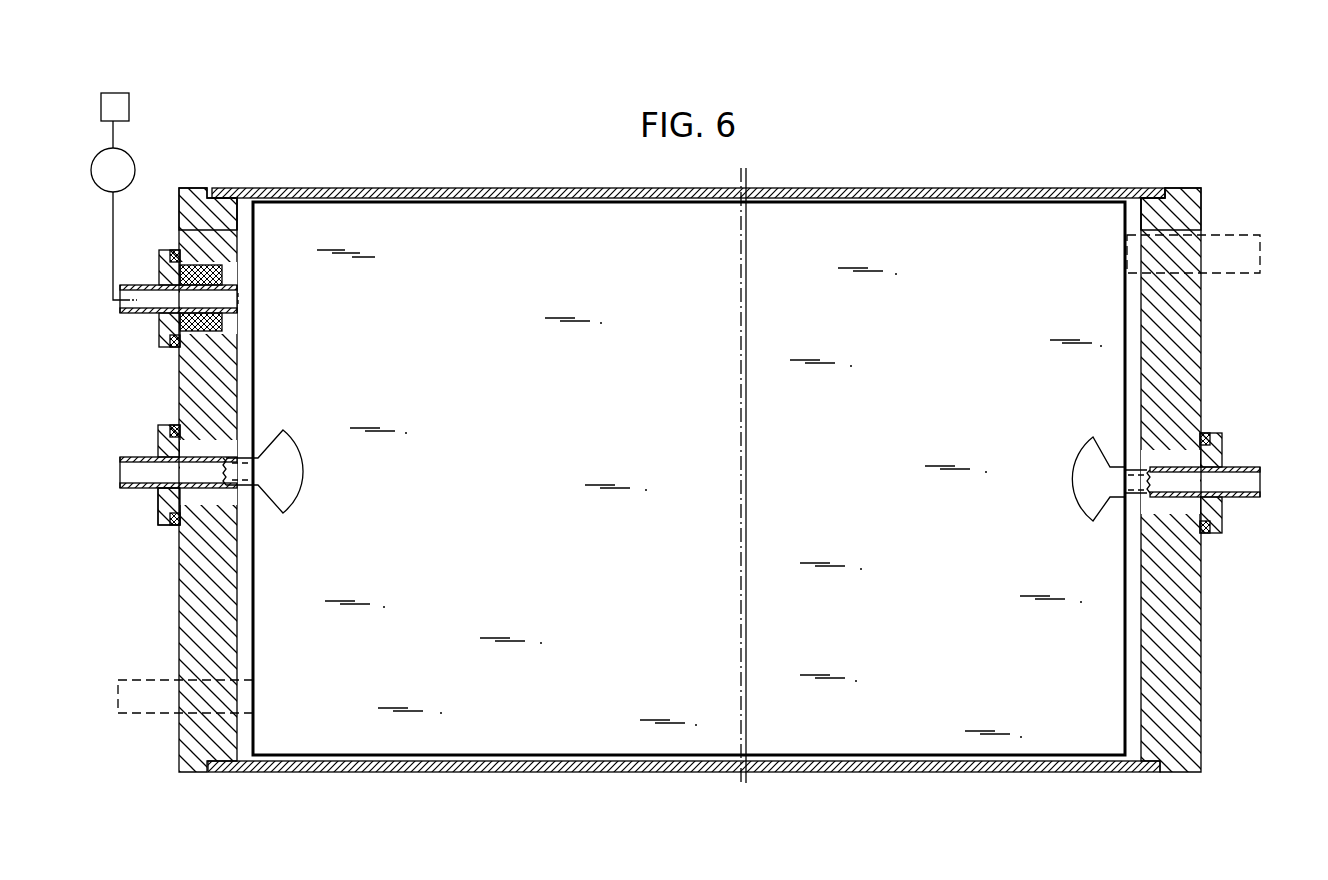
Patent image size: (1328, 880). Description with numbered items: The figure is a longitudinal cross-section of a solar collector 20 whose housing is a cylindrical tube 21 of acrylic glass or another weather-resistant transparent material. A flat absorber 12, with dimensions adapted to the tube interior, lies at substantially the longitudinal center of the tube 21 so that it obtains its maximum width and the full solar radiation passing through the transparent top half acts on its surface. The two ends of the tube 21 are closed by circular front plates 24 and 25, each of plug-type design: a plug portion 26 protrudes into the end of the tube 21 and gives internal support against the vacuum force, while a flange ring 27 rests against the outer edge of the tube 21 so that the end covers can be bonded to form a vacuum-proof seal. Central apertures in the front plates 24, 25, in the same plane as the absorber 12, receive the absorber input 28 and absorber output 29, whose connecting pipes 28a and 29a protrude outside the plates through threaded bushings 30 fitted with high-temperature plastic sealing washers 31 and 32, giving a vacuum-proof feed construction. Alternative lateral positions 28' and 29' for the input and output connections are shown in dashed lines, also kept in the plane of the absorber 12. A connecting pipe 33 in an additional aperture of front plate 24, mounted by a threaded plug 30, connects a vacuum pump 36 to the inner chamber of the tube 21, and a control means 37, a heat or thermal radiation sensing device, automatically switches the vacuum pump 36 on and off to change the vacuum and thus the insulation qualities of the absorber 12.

The absorber 12 is at (461, 437).
The solar collector 20 is at (911, 186).
The cylindrical tube 21 is at (367, 764).
The front plate 24 is at (195, 383).
The front plate 25 is at (1192, 315).
The plug portion 26 is at (227, 212).
The flange ring 27 is at (193, 196).
The absorber input 28 is at (277, 454).
The connecting pipe 28a is at (130, 466).
The lateral input connection position 28' is at (185, 665).
The absorber output 29 is at (1111, 462).
The connecting pipe 29a is at (1237, 480).
The lateral output connection position 29' is at (1193, 222).
The threaded bushing 30 is at (167, 254).
The sealing washer 31 is at (232, 503).
The sealing washer 32 is at (168, 524).
The connecting pipe 33 is at (147, 307).
The vacuum pump 36 is at (146, 166).
The control means 37 is at (129, 100).